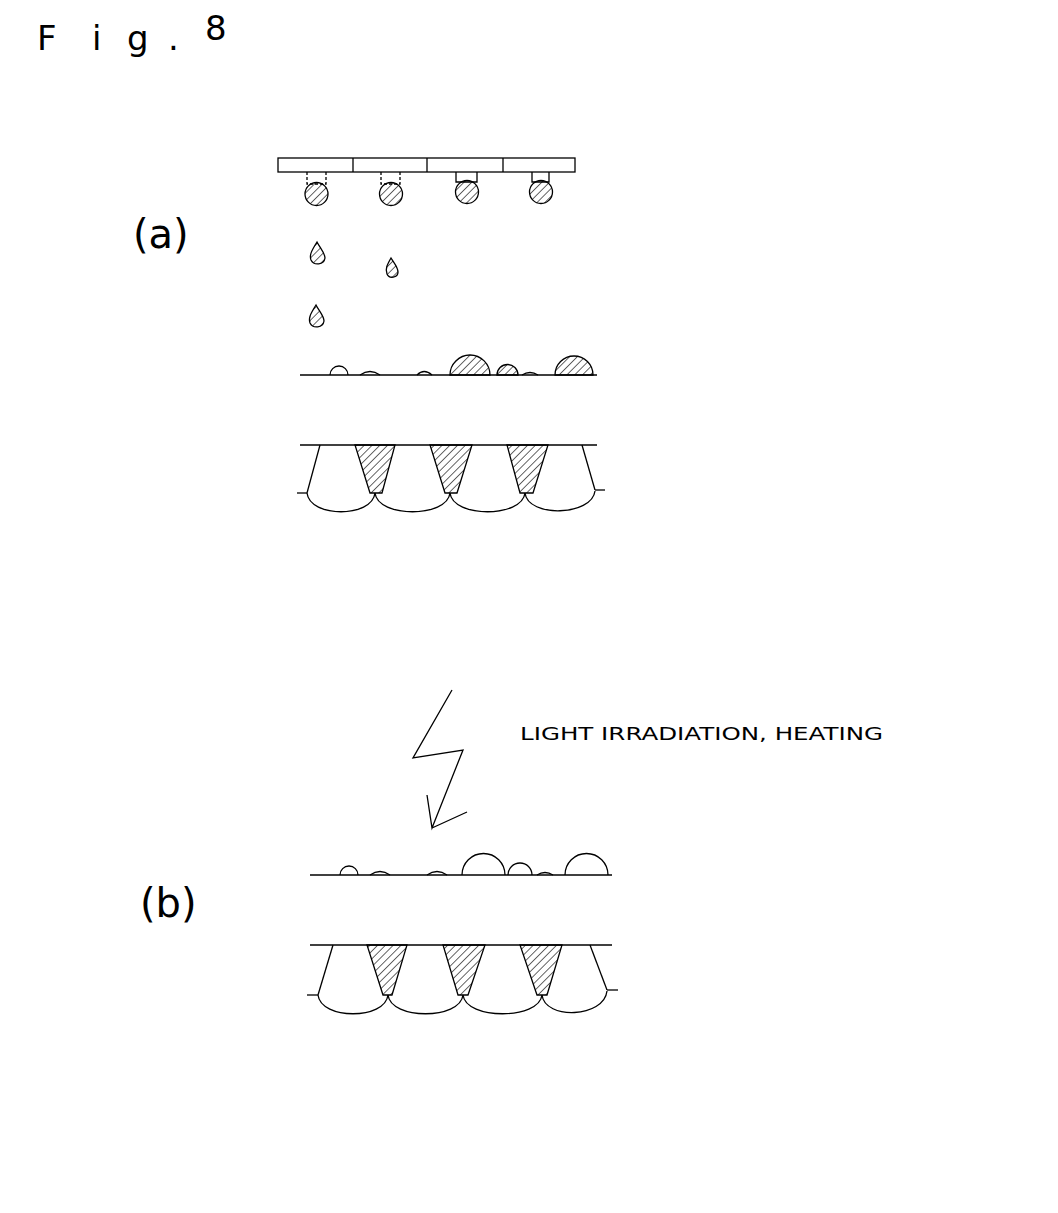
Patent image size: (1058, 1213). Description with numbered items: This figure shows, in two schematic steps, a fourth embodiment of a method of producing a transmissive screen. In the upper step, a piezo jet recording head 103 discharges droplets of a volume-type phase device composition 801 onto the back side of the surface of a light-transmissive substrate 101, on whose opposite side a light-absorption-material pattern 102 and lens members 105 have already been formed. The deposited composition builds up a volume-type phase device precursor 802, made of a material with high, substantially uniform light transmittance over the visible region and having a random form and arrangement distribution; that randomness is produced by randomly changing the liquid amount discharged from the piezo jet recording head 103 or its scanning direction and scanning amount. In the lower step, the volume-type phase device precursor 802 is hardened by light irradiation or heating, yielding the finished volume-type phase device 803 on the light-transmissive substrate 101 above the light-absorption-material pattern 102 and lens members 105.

The piezo jet recording head 103 is at (571, 160).
The volume-type phase device composition 801 is at (311, 253).
The volume-type phase device precursor 802 is at (582, 362).
The volume-type phase device 803 is at (597, 867).
The light-transmissive substrate 101 is at (573, 409).
The light-absorption-material pattern 102 is at (378, 497).
The lens members 105 is at (577, 495).